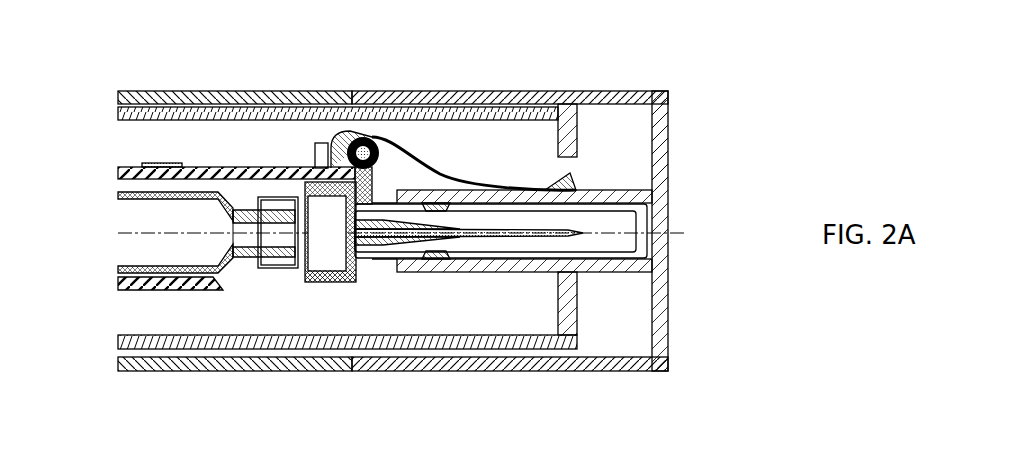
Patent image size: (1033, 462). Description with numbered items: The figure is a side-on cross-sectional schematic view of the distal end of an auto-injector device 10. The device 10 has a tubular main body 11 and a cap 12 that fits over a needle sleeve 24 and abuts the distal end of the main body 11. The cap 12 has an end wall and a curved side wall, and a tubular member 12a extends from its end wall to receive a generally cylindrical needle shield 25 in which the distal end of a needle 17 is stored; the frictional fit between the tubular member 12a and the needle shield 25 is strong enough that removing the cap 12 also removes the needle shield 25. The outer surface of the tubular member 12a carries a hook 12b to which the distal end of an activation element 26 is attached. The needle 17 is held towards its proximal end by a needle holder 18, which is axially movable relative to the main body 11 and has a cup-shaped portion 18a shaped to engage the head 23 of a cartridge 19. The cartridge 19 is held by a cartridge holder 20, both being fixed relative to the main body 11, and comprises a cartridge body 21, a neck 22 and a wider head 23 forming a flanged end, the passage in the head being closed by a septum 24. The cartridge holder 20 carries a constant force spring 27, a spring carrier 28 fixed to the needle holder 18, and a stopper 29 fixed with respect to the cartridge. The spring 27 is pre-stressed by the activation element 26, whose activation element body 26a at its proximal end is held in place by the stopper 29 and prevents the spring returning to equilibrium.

The device 10 is at (790, 57).
The main body 11 is at (130, 372).
The cap 12 is at (634, 327).
The tubular member 12a is at (638, 189).
The hook 12b is at (560, 175).
The needle 17 is at (461, 240).
The needle holder 18 is at (362, 283).
The cup-shaped portion 18a is at (333, 283).
The cartridge 19 is at (118, 195).
The cartridge holder 20 is at (118, 170).
The cartridge body 21 is at (177, 229).
The neck 22 is at (247, 258).
The head 23 is at (280, 268).
The needle sleeve 24 is at (218, 337).
The needle shield 25 is at (588, 262).
The activation element 26 is at (433, 170).
The activation element body 26a is at (320, 90).
The constant force spring 27 is at (360, 91).
The spring carrier 28 is at (373, 188).
The stopper 29 is at (314, 152).